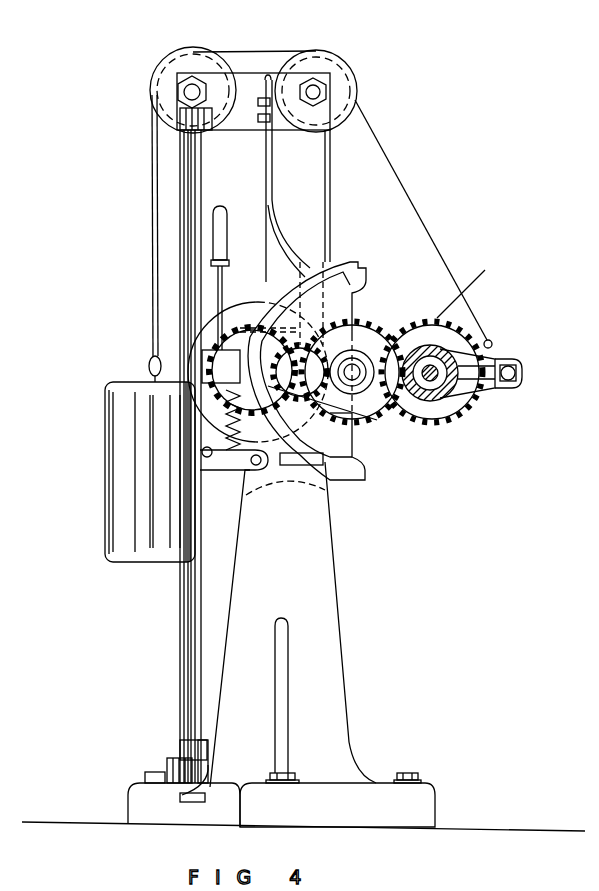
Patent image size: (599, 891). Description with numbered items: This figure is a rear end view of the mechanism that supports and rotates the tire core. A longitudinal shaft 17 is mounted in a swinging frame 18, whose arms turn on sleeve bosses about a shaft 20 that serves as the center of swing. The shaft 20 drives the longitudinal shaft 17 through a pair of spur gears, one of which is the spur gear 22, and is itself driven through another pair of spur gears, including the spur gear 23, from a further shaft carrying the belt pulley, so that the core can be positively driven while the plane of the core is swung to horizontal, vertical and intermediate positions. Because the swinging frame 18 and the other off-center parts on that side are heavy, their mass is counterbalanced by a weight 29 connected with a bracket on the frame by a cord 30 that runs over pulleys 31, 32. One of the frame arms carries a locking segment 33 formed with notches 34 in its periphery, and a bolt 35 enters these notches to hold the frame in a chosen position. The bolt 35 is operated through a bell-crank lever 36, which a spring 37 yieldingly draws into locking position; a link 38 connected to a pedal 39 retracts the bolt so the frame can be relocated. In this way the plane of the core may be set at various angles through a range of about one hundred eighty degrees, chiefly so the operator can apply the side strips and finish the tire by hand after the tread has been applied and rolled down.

The longitudinal shaft 17 is at (437, 360).
The swinging frame 18 is at (483, 403).
The shaft 20 is at (352, 372).
The spur gear 22 is at (473, 286).
The spur gear 23 is at (377, 420).
The weight 29 is at (118, 447).
The cord 30 is at (150, 228).
The pulley 31 is at (178, 72).
The pulley 32 is at (338, 82).
The locking segment 33 is at (362, 262).
The notches 34 is at (355, 250).
The bolt 35 is at (348, 414).
The bell-crank lever 36 is at (223, 468).
The spring 37 is at (212, 450).
The link 38 is at (213, 530).
The pedal 39 is at (182, 795).